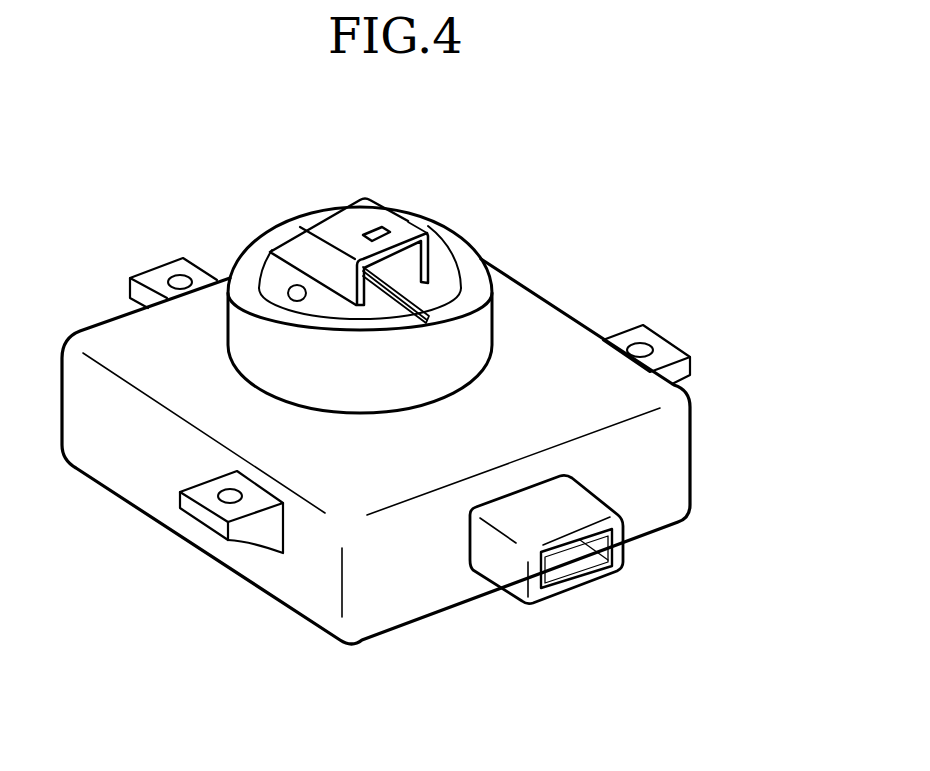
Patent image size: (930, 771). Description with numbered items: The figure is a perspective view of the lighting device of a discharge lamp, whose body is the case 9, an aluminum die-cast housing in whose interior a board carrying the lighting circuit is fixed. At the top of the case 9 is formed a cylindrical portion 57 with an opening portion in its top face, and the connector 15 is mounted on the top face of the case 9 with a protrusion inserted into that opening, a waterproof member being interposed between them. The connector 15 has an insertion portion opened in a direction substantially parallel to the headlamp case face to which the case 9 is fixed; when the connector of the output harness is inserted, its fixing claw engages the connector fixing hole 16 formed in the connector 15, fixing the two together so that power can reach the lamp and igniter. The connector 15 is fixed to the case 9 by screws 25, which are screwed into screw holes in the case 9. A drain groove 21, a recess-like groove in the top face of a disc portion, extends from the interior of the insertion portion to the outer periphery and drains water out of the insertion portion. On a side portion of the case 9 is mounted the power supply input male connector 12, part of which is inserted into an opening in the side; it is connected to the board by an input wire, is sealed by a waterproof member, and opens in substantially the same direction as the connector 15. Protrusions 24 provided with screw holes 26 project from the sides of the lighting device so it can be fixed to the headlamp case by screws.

The case 9 is at (692, 450).
The power supply input male connector 12 is at (620, 569).
The connector 15 is at (329, 209).
The connector fixing hole 16 is at (376, 230).
The drain groove 21 is at (418, 306).
The protrusions 24 is at (178, 262).
The screws 25 is at (432, 233).
The screw holes 26 is at (160, 280).
The cylindrical portion 57 is at (473, 357).